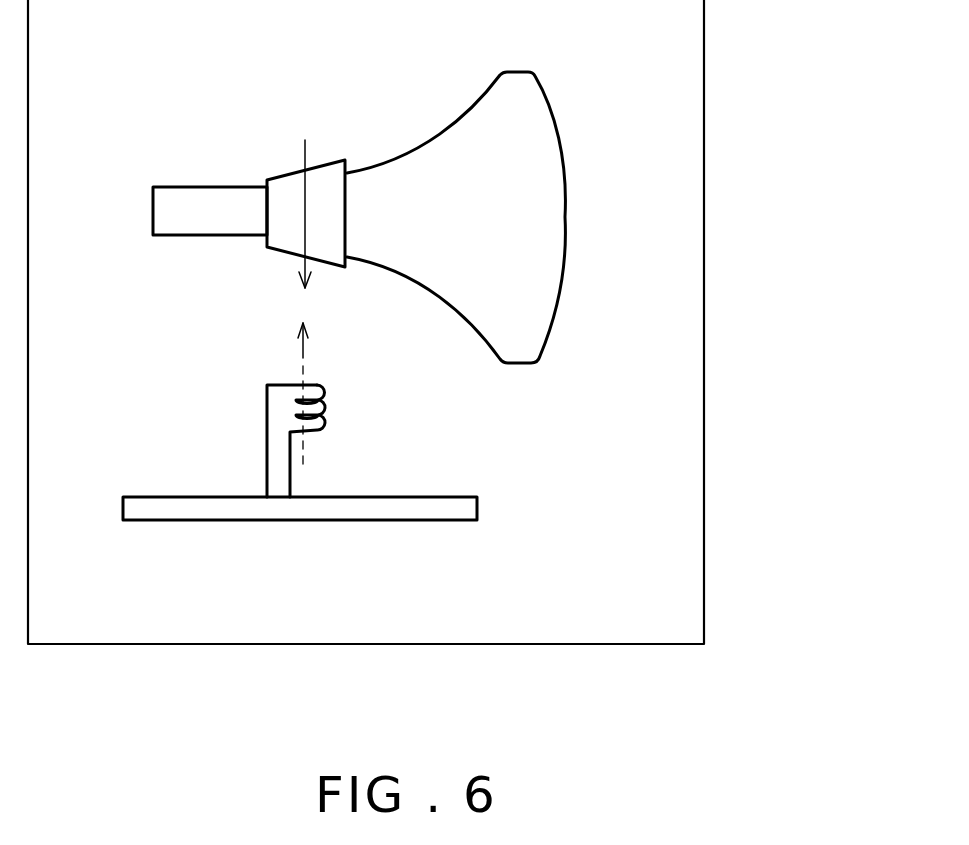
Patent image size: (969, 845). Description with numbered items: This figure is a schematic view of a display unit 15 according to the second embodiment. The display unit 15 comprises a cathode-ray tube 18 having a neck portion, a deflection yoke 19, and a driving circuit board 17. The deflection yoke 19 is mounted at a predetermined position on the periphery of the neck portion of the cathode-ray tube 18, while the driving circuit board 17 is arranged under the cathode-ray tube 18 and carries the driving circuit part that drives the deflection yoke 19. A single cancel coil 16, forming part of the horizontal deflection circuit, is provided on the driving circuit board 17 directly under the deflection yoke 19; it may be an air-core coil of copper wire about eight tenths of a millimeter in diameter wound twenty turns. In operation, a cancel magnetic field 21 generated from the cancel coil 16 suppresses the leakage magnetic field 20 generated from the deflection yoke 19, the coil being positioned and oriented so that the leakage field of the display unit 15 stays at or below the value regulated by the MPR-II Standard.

The display unit 15 is at (717, 612).
The cancel coil 16 is at (323, 427).
The driving circuit board 17 is at (175, 513).
The cathode-ray tube 18 is at (517, 93).
The deflection yoke 19 is at (281, 253).
The leakage magnetic field 20 is at (305, 150).
The cancel magnetic field 21 is at (300, 351).